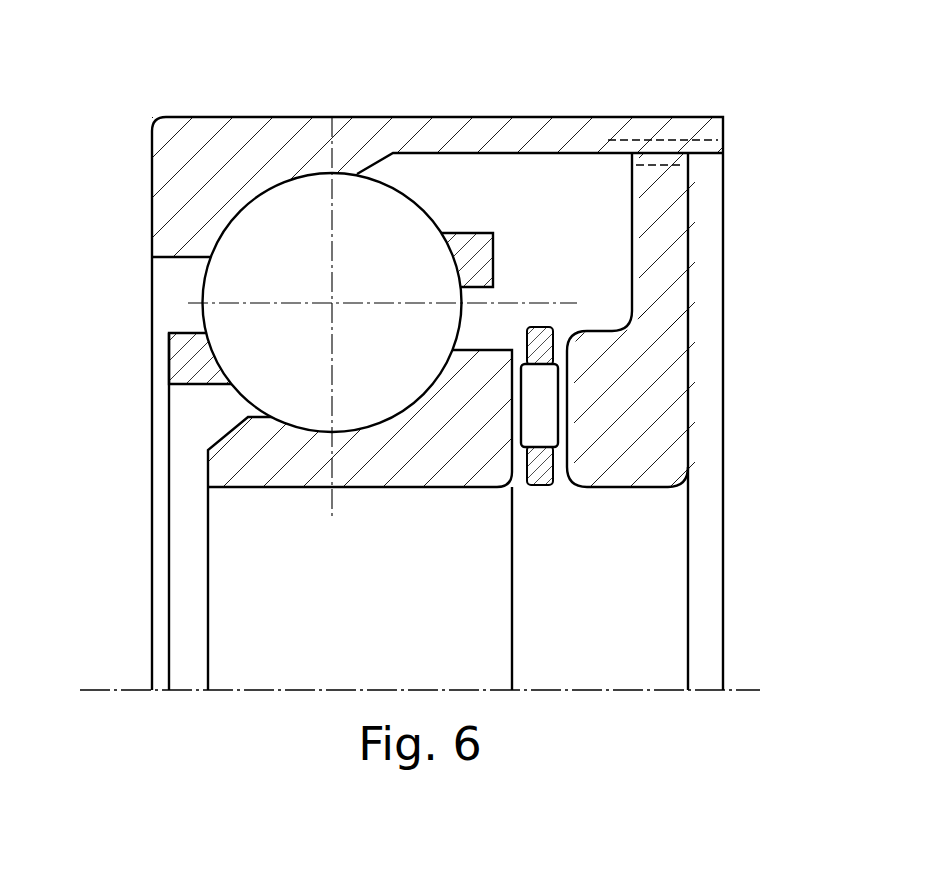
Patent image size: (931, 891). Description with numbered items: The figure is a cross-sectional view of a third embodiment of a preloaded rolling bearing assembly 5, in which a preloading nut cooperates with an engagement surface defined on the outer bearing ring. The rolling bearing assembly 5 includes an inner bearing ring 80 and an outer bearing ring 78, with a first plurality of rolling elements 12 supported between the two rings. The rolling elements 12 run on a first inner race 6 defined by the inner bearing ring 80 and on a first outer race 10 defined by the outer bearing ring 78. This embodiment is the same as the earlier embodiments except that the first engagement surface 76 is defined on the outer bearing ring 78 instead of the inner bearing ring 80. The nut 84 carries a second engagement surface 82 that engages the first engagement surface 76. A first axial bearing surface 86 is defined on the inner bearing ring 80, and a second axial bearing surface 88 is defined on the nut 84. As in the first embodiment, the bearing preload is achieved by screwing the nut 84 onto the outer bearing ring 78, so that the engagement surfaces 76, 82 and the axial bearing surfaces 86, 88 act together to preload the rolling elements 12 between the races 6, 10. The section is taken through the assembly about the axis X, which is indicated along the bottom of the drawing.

The rolling bearing assembly 5 is at (176, 112).
The first inner race 6 is at (370, 480).
The first outer race 10 is at (302, 176).
The first plurality of rolling elements 12 is at (213, 283).
The first engagement surface 76 is at (706, 151).
The outer bearing ring 78 is at (437, 138).
The inner bearing ring 80 is at (228, 468).
The second engagement surface 82 is at (680, 153).
The nut 84 is at (675, 403).
The first axial bearing surface 86 is at (510, 420).
The second axial bearing surface 88 is at (590, 414).
The rotation axis X is at (742, 690).